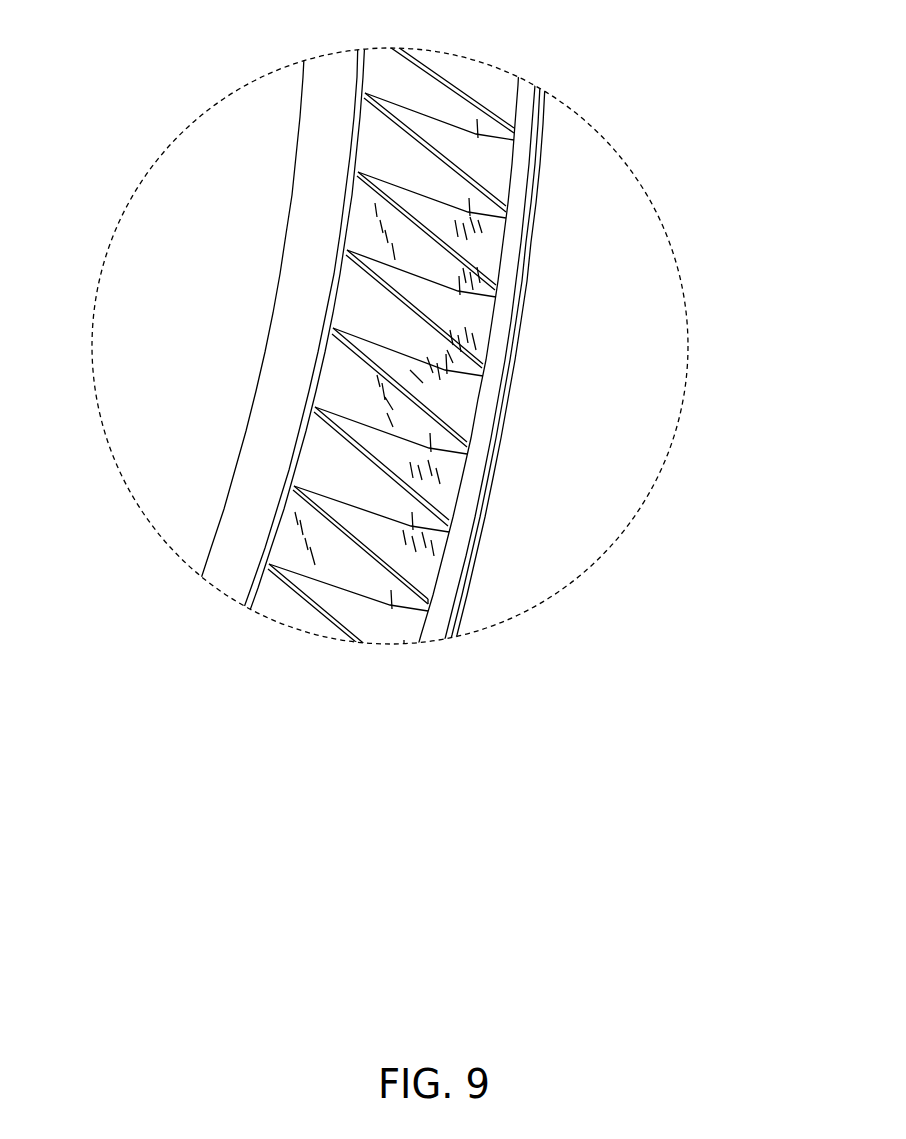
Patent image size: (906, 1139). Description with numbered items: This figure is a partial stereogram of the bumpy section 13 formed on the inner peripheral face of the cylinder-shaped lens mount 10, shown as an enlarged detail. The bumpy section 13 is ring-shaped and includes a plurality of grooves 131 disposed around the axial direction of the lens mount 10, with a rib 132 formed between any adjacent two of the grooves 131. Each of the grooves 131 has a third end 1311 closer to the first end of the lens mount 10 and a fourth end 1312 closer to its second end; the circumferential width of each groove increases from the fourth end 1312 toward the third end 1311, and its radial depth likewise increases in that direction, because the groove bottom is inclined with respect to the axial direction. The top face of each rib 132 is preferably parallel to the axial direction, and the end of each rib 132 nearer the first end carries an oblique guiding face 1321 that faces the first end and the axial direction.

The lens mount 10 is at (572, 158).
The bumpy section 13 is at (410, 381).
The grooves 131 is at (410, 357).
The third end 1311 is at (447, 488).
The fourth end 1312 is at (335, 420).
The rib 132 is at (340, 570).
The guiding face 1321 is at (407, 597).